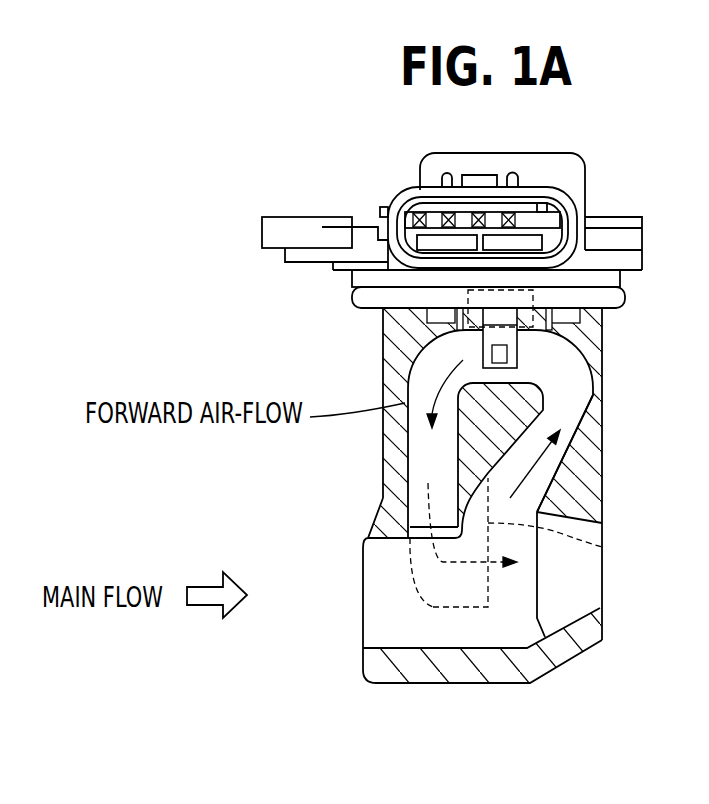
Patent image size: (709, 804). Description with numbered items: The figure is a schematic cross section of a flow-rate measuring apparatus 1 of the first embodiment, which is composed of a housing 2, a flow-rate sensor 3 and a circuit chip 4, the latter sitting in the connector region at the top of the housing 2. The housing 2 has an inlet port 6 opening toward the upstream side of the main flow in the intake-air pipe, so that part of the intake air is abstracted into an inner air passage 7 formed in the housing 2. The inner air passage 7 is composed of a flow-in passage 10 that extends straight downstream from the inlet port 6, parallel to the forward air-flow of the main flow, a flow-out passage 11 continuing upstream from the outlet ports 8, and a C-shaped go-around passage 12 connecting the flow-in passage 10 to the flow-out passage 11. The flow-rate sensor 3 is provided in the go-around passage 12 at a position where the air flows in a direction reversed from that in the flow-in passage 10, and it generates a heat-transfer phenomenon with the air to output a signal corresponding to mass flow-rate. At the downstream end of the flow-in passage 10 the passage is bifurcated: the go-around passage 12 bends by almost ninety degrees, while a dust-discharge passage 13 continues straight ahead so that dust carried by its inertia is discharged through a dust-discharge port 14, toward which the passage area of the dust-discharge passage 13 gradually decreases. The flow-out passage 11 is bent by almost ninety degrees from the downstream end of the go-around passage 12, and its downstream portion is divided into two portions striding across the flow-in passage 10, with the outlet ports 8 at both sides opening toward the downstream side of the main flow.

The flow-rate measuring apparatus 1 is at (646, 136).
The housing 2 is at (383, 349).
The flow-rate sensor 3 is at (505, 353).
The circuit chip 4 is at (535, 305).
The inlet port 6 is at (363, 613).
The inner air passage 7 is at (483, 544).
The outlet ports 8 is at (602, 547).
The flow-in passage 10 is at (363, 558).
The flow-out passage 11 is at (467, 592).
The go-around passage 12 is at (573, 398).
The dust-discharge passage 13 is at (570, 603).
The dust-discharge port 14 is at (603, 582).